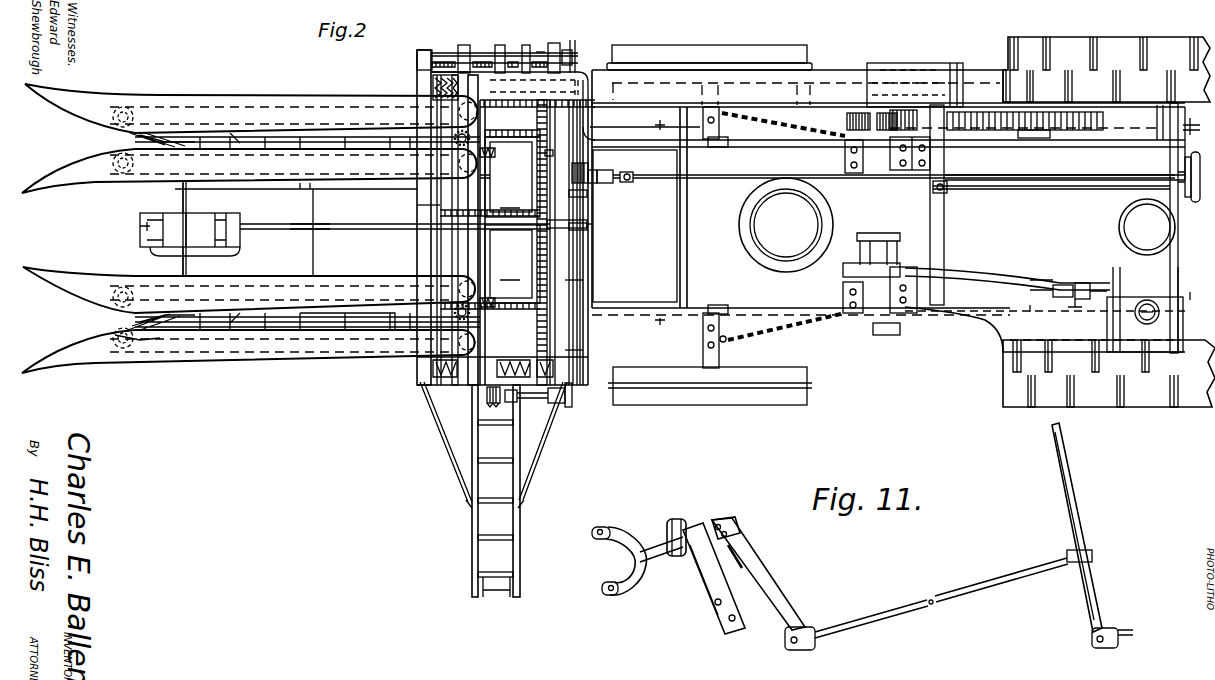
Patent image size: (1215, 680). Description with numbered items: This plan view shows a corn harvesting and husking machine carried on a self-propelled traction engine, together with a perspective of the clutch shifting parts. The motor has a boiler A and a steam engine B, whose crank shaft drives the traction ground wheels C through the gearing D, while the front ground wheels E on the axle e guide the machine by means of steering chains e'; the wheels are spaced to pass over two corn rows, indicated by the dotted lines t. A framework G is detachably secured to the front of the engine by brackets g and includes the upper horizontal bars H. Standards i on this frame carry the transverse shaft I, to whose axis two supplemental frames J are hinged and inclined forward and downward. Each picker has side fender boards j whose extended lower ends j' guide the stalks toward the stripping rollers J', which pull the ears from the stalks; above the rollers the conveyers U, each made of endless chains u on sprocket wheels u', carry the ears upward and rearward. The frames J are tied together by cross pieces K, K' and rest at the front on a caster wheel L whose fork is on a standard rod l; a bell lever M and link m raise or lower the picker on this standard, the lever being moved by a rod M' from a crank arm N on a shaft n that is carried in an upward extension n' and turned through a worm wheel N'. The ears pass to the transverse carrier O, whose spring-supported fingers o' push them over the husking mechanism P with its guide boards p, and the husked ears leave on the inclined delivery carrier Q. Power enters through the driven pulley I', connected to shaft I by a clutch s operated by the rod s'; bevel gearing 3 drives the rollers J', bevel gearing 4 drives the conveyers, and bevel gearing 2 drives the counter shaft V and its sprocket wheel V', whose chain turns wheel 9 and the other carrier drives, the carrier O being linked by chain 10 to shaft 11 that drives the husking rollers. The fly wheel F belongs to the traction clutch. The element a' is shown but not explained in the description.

The extended lower ends of fender boards j' is at (249, 228).
The stripping rollers J' is at (239, 200).
The side fender boards j is at (296, 230).
The supplemental frames J is at (329, 170).
The endless chains u is at (164, 262).
The sprocket wheels u' is at (121, 345).
The endless carriers or conveyers U is at (393, 330).
The rollers a' is at (317, 226).
The bell lever M is at (190, 219).
The link m is at (147, 242).
The standard rod l is at (140, 227).
The cross frame piece K is at (205, 228).
The caster wheel L is at (222, 213).
The rod M' is at (395, 217).
The cross frame piece K' is at (311, 211).
The upper horizontal bars H is at (418, 74).
The husking mechanism P is at (431, 92).
The framework G is at (510, 56).
The driven pulley I' is at (523, 48).
The shaft 11 is at (540, 54).
The guide boards or fenders p is at (556, 100).
The transverse shaft I is at (514, 242).
The bevel gearing 4 is at (500, 180).
The brackets or standards i is at (497, 334).
The bevel gearing 3 is at (495, 153).
The transverse carrier O is at (545, 154).
The carrier fingers o' is at (510, 247).
The sprocket chain or belt 10 is at (576, 285).
The wheel 9 is at (570, 350).
The crank arm N is at (569, 213).
The worm wheel N' is at (572, 167).
The shaft n is at (591, 242).
The upward extension n' is at (590, 208).
The clutch mechanism s is at (1190, 122).
The boiler A is at (884, 211).
The front ground wheels E is at (712, 50).
The fly wheel F is at (915, 73).
The brackets g is at (716, 147).
The axle e is at (757, 222).
The steering chains e' is at (782, 328).
The dotted lines t is at (924, 227).
The rod s' is at (874, 118).
The gearing D is at (845, 121).
The steam engine B is at (1014, 292).
The traction ground wheels C is at (1114, 40).
The bevel gearing 2 is at (488, 398).
The counter shaft V is at (535, 403).
The sprocket wheel V' is at (580, 400).
The inclined delivery carrier Q is at (524, 486).